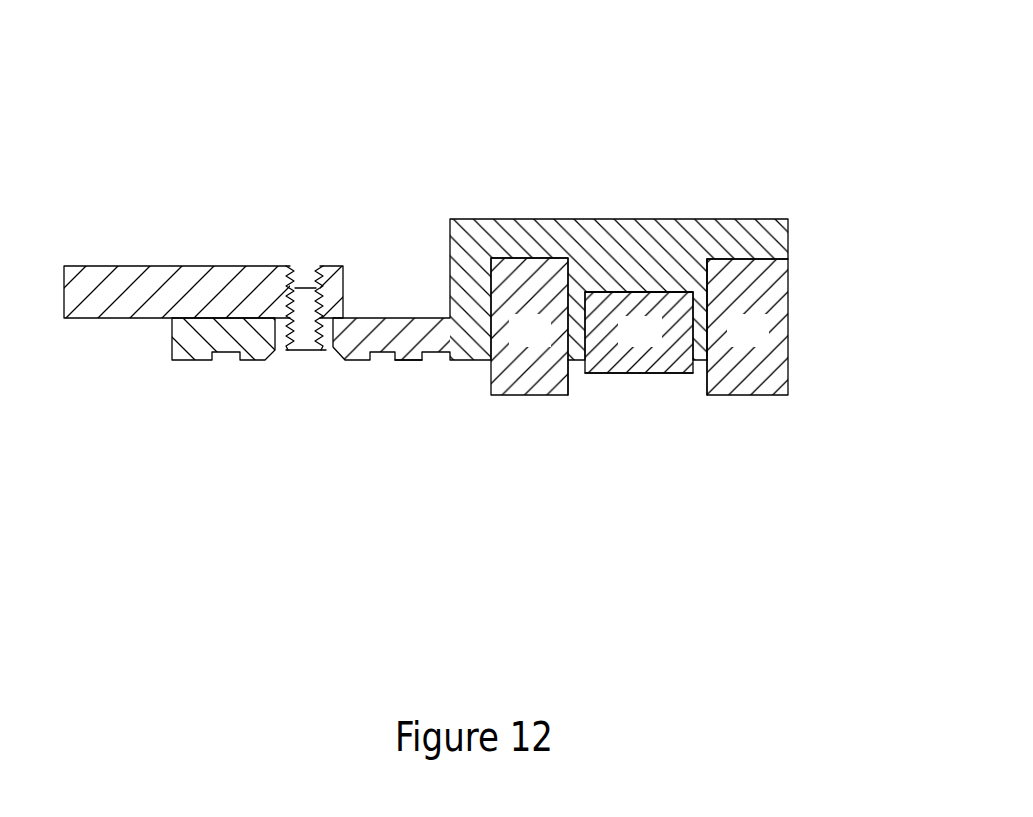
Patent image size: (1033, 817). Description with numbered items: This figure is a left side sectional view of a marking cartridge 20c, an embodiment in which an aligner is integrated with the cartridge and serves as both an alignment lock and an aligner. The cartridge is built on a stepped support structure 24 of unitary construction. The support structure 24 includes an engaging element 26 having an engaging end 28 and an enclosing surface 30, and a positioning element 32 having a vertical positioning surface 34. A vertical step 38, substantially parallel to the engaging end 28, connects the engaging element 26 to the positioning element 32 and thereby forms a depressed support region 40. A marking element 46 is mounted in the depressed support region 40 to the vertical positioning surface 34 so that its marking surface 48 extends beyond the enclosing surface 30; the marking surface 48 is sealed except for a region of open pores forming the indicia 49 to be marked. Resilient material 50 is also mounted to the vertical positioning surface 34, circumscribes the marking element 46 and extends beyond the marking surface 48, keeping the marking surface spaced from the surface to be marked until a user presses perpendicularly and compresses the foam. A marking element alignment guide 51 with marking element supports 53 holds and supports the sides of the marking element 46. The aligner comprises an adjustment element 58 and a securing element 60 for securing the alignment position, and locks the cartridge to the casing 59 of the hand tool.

The marking cartridge 20c is at (602, 96).
The support structure 24 is at (783, 475).
The engaging element 26 is at (382, 334).
The engaging end 28 is at (172, 347).
The enclosing surface 30 is at (404, 361).
The positioning element 32 is at (622, 246).
The vertical positioning surface 34 is at (604, 288).
The vertical step 38 is at (465, 245).
The depressed support region 40 is at (790, 258).
The marking element 46 is at (658, 345).
The marking surface 48 is at (605, 374).
The indicia 49 is at (635, 374).
The resilient material 50 is at (548, 345).
The marking element alignment guide 51 is at (707, 278).
The marking element supports 53 is at (570, 376).
The adjustment element 58 is at (331, 347).
The casing 59 is at (223, 282).
The securing element 60 is at (305, 305).